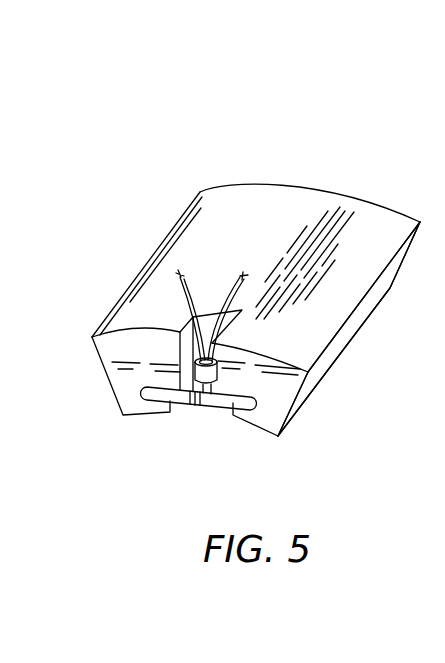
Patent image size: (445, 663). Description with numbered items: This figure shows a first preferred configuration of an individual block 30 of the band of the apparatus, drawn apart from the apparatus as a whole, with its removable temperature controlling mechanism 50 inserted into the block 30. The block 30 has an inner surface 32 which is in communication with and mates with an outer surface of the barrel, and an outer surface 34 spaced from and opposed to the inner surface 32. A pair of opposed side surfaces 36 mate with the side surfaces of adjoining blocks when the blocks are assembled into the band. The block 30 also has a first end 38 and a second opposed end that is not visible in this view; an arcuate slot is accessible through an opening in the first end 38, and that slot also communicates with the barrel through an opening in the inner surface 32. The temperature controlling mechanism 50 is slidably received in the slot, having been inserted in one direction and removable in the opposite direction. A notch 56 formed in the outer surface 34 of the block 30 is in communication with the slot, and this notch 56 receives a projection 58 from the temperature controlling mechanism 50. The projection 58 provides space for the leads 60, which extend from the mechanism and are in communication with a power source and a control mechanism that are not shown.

The block 30 is at (323, 136).
The inner surface 32 is at (258, 432).
The outer surface 34 is at (380, 225).
The side surfaces 36 is at (343, 337).
The first end 38 is at (112, 348).
The temperature controlling mechanism 50 is at (160, 394).
The notch 56 is at (213, 310).
The projection 58 is at (209, 397).
The leads 60 is at (193, 299).